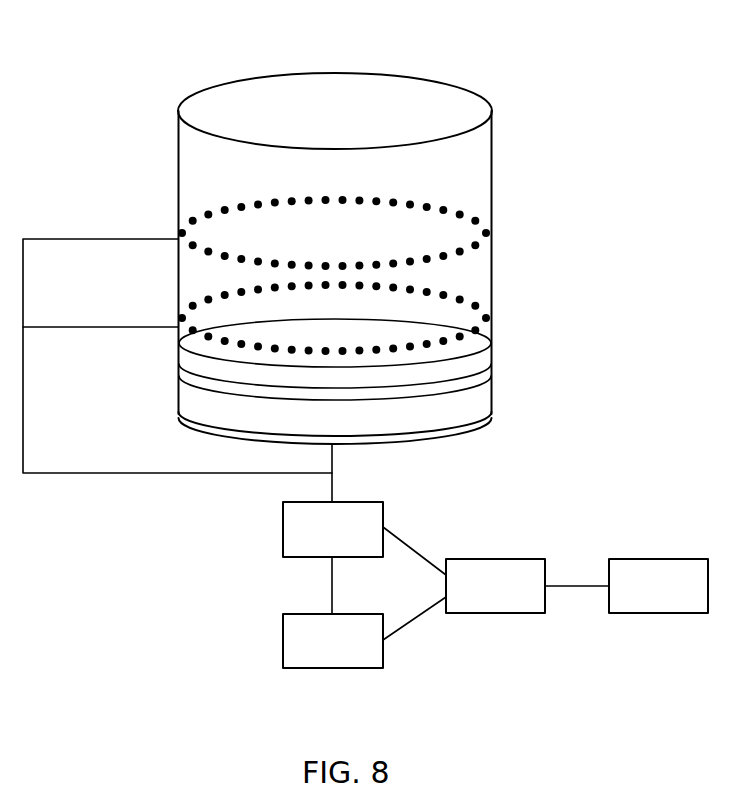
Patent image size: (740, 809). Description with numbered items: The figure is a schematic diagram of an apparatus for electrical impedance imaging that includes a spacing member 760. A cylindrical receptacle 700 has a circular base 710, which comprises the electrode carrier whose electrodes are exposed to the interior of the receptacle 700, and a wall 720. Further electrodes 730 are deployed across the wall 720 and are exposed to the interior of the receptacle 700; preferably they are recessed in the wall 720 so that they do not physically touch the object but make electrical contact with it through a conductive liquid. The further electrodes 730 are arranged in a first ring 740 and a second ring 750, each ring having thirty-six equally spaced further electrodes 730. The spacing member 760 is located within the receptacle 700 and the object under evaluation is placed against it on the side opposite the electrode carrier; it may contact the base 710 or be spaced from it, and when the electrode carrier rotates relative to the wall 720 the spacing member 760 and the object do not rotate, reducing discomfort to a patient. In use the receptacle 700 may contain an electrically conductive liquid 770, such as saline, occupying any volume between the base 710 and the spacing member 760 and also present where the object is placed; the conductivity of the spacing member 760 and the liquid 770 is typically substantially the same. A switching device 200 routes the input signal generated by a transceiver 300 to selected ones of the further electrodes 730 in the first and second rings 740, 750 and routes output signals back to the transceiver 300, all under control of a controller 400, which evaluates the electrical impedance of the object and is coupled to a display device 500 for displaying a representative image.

The receptacle 700 is at (530, 89).
The base 710 is at (468, 424).
The wall 720 is at (493, 193).
The further electrodes 730 is at (477, 220).
The first ring 740 is at (196, 217).
The second ring 750 is at (196, 304).
The spacing member 760 is at (342, 397).
The electrically conductive liquid 770 is at (405, 370).
The switching device 200 is at (308, 544).
The transceiver 300 is at (308, 656).
The controller 400 is at (470, 598).
The display device 500 is at (633, 598).